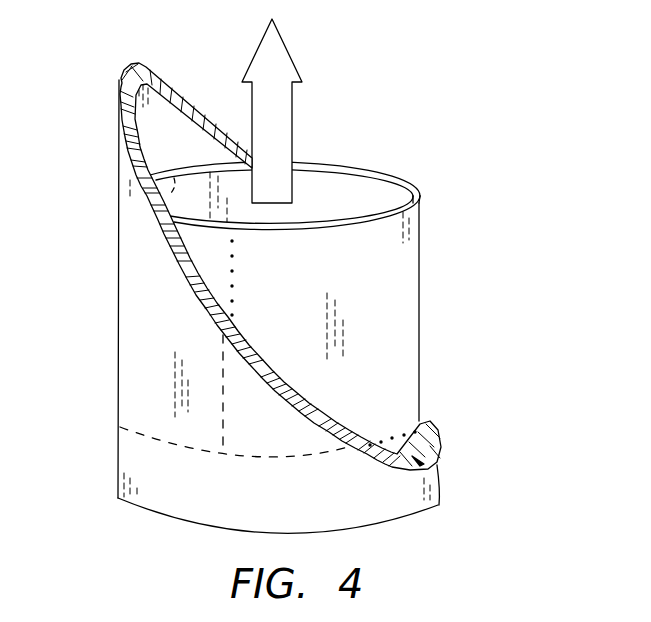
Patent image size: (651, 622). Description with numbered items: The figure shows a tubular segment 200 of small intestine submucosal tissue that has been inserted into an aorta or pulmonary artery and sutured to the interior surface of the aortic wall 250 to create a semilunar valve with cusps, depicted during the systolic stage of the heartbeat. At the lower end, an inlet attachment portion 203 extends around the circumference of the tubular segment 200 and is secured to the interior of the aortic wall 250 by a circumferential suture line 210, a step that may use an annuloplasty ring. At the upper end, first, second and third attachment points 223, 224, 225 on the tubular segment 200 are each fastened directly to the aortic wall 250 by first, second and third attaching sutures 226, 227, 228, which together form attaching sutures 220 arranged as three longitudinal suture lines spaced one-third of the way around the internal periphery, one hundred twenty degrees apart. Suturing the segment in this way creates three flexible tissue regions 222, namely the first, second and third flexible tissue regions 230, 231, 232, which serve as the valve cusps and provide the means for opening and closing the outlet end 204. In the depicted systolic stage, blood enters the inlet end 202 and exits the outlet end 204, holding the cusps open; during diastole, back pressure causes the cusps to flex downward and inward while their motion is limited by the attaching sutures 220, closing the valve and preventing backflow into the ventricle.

The tubular segment 200 is at (420, 283).
The inlet end 202 is at (428, 475).
The inlet attachment portion 203 is at (391, 432).
The outlet end 204 is at (322, 150).
The circumferential suture line 210 is at (197, 447).
The attaching sutures 220 is at (233, 290).
The flexible tissue regions 222 is at (378, 320).
The first attachment point 223 is at (232, 268).
The second attachment point 224 is at (172, 193).
The third attachment point 225 is at (377, 203).
The first attaching suture 226 is at (223, 390).
The second attaching suture 227 is at (172, 217).
The third attaching suture 228 is at (377, 188).
The first flexible tissue region 230 is at (188, 260).
The second flexible tissue region 231 is at (303, 215).
The third flexible tissue region 232 is at (357, 284).
The aortic wall 250 is at (210, 98).